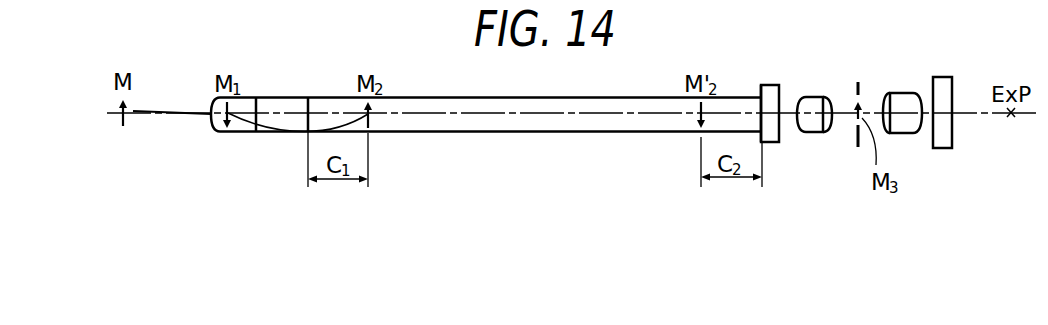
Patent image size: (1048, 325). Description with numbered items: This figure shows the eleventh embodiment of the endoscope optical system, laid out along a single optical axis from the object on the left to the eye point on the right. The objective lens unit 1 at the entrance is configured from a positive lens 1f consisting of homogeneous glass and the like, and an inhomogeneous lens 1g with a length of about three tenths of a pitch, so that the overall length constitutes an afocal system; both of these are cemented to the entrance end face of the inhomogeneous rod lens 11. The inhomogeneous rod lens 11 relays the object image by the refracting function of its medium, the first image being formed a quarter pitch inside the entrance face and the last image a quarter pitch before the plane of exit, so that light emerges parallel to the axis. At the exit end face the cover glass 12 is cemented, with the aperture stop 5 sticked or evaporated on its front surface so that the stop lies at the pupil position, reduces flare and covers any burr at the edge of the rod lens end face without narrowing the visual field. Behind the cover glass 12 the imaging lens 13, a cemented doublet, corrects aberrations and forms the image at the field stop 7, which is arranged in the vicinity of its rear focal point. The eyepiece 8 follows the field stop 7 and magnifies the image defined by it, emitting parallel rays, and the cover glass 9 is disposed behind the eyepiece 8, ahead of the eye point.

The objective lens unit 1 is at (289, 163).
The positive lens 1f is at (257, 145).
The inhomogeneous lens 1g is at (282, 141).
The inhomogeneous rod lens 11 is at (760, 190).
The aperture stop 5 is at (770, 142).
The cover glass 12 is at (781, 133).
The imaging lens 13 is at (815, 133).
The field stop 7 is at (860, 90).
The eyepiece 8 is at (906, 92).
The cover glass 9 is at (945, 76).